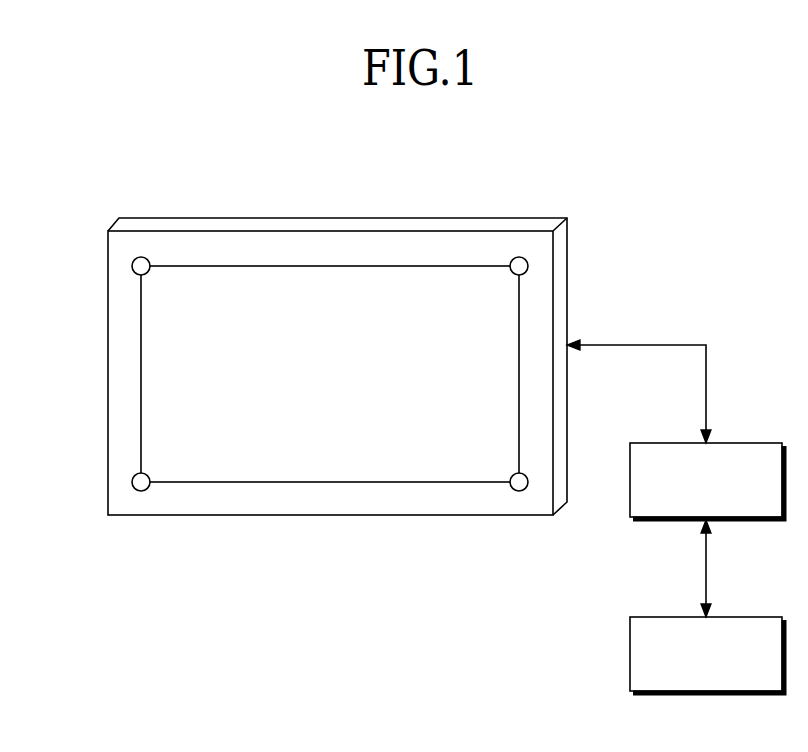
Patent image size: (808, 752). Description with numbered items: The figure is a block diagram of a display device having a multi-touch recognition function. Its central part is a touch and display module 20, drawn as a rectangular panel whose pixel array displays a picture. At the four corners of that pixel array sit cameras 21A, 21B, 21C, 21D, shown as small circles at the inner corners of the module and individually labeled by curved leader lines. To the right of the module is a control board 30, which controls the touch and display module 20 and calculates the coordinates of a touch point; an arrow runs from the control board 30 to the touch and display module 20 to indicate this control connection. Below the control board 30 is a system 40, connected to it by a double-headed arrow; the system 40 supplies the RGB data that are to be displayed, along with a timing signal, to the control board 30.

The touch and display module 20 is at (342, 390).
The camera 21A is at (135, 260).
The camera 21B is at (525, 260).
The camera 21C is at (135, 488).
The camera 21D is at (525, 488).
The control board 30 is at (697, 498).
The system 40 is at (697, 670).